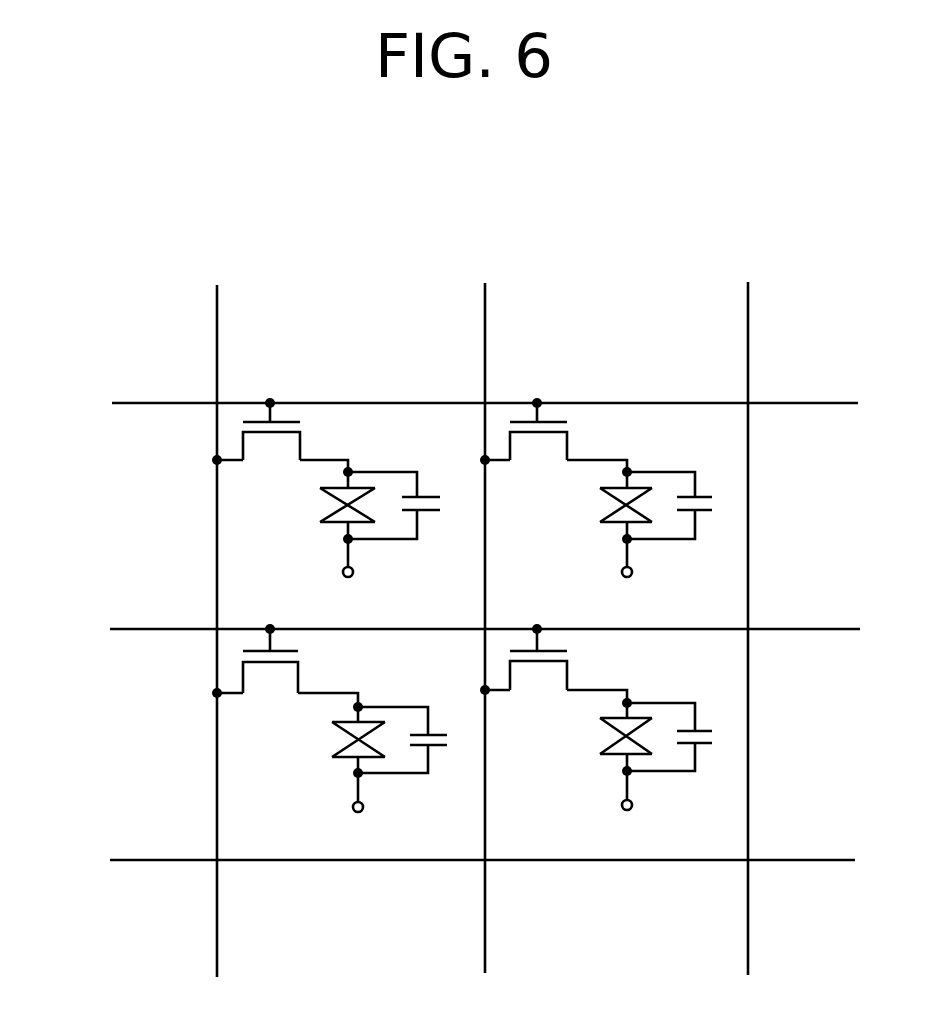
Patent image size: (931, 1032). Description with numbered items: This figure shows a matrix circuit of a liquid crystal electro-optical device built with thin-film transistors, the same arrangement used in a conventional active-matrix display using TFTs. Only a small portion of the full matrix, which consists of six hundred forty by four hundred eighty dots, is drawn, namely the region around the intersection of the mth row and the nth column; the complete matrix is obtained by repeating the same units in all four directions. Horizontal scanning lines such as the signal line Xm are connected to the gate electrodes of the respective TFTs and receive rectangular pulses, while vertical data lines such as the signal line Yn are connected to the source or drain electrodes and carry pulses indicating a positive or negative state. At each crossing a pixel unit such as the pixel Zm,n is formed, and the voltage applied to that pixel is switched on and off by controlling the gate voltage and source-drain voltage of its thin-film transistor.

The signal line (data line) Yn is at (214, 606).
The signal line (scanning line) Xm is at (448, 394).
The pixel Zm,n is at (326, 487).